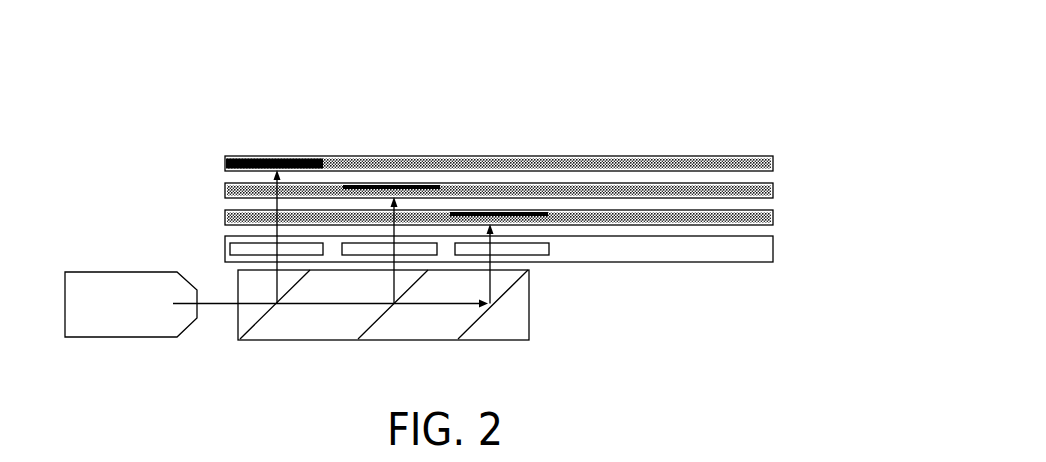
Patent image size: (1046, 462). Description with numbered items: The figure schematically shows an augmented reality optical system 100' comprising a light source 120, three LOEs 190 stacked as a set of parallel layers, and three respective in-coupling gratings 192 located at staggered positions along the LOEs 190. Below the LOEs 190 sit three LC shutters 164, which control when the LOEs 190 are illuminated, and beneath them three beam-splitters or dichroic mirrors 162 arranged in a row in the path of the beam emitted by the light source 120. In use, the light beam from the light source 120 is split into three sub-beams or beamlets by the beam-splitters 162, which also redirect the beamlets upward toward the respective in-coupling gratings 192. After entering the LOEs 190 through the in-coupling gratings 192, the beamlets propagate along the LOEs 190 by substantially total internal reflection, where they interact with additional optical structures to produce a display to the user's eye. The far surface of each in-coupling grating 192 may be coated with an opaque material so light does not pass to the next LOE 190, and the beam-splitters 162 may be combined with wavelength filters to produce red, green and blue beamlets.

The optical system 100' is at (461, 186).
The light source 120 is at (90, 287).
The beam-splitters 162 is at (545, 307).
The LC shutters 164 is at (783, 250).
The LOEs 190 is at (773, 163).
The in-coupling gratings 192 is at (503, 214).